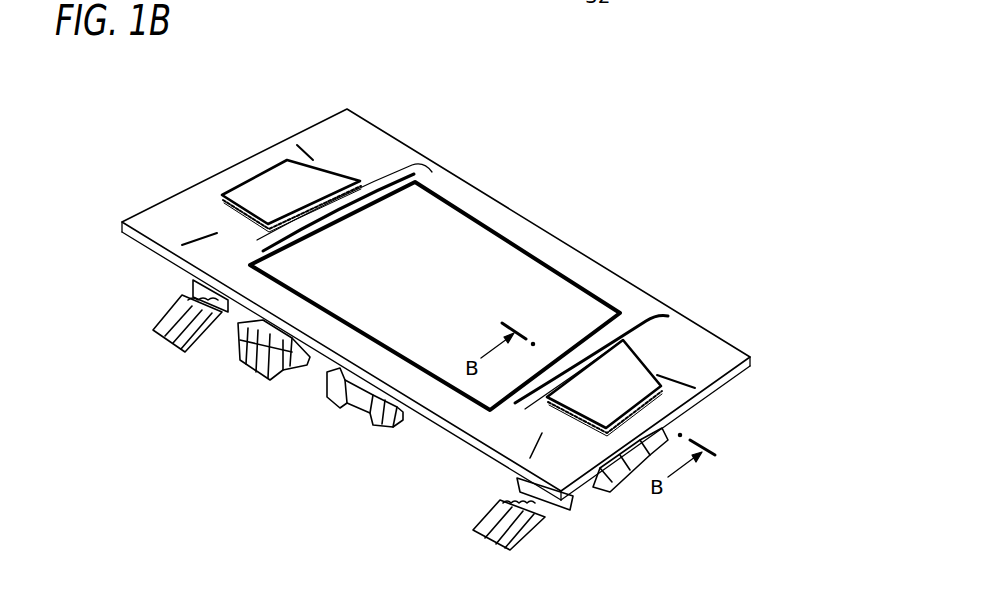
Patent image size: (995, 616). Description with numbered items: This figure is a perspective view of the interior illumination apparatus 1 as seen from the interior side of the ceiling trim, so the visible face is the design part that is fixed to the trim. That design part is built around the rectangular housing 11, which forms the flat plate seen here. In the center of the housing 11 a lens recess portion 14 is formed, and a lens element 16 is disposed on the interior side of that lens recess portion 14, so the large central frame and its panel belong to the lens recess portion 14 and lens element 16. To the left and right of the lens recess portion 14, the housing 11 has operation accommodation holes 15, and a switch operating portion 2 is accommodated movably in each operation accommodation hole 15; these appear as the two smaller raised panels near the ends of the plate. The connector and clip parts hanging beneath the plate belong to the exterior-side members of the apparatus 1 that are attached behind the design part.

The interior illumination apparatus 1 is at (153, 137).
The housing 11 is at (323, 143).
The switch operating portion 2 is at (313, 185).
The operation accommodation hole 15 is at (258, 181).
The lens recess portion 14 is at (537, 256).
The lens element 16 is at (447, 233).